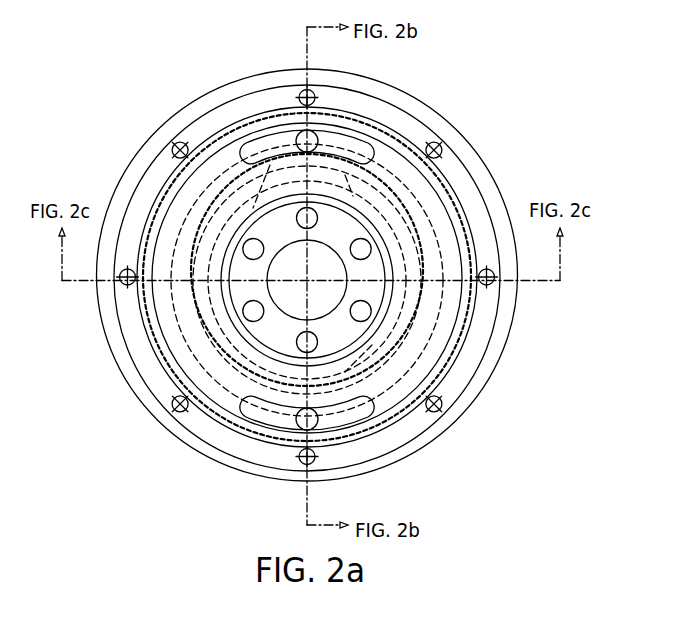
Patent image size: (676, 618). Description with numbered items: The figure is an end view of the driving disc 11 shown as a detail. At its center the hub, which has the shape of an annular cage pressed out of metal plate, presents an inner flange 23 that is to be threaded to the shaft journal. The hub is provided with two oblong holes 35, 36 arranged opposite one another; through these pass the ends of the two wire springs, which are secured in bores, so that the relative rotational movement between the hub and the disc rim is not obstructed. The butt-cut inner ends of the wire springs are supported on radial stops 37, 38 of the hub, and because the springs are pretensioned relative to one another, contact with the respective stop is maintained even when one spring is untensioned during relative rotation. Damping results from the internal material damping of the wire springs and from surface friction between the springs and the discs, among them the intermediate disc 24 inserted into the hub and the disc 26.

The driving disc 11 is at (518, 140).
The inner flange 23 is at (382, 297).
The oblong hole 35 is at (265, 422).
The oblong hole 36 is at (342, 134).
The radial stop 37 is at (343, 130).
The radial stop 38 is at (347, 470).
The intermediate disc 24 is at (66, 615).
The disc 26 is at (109, 612).